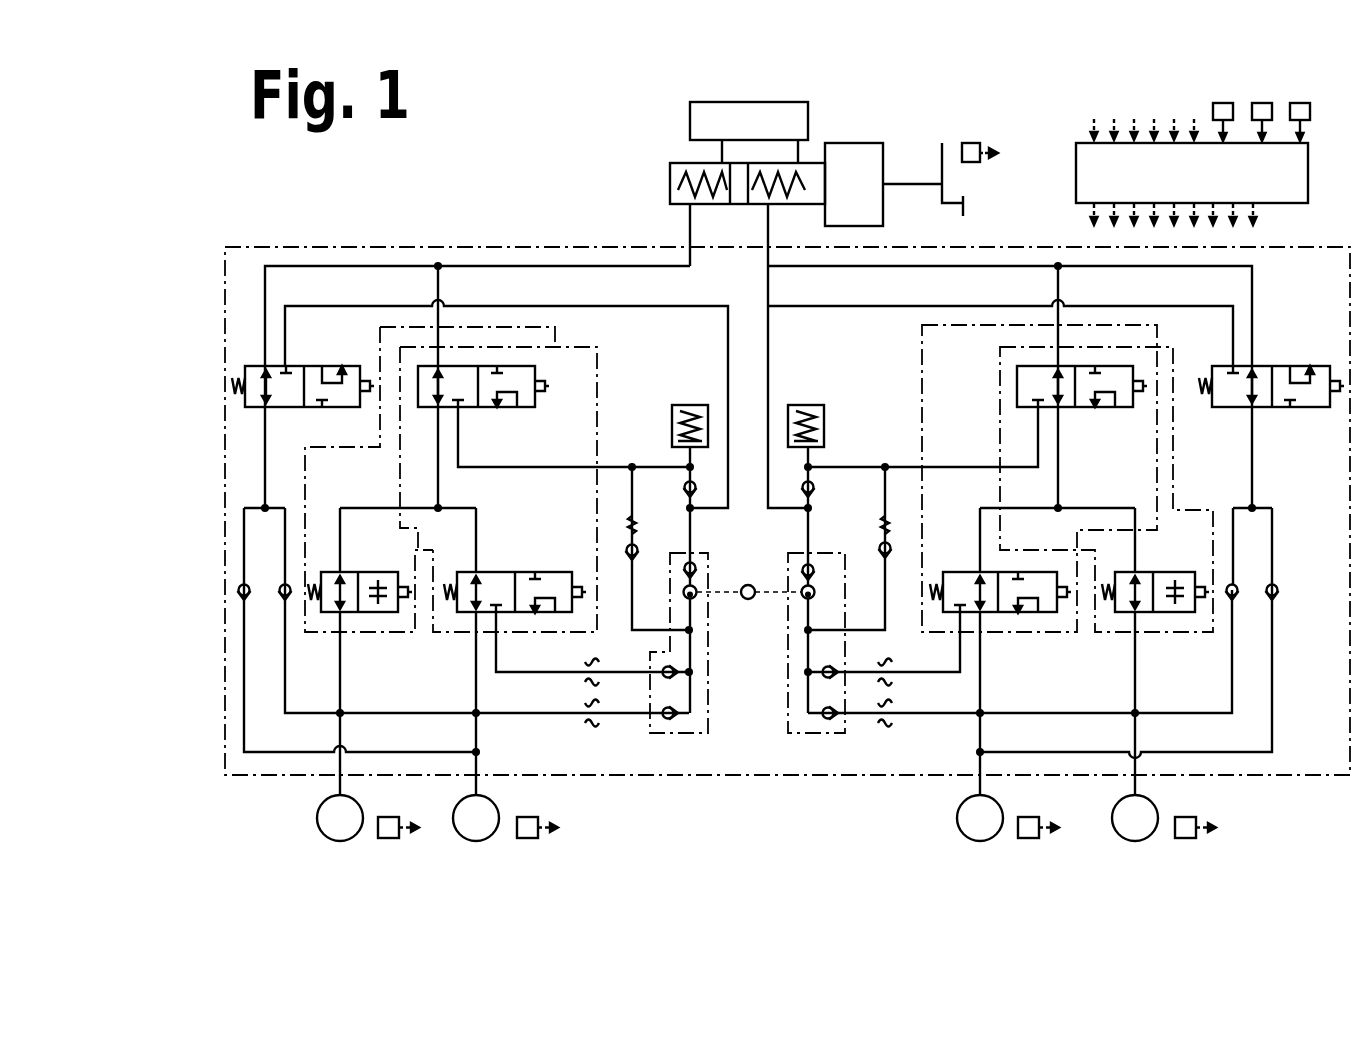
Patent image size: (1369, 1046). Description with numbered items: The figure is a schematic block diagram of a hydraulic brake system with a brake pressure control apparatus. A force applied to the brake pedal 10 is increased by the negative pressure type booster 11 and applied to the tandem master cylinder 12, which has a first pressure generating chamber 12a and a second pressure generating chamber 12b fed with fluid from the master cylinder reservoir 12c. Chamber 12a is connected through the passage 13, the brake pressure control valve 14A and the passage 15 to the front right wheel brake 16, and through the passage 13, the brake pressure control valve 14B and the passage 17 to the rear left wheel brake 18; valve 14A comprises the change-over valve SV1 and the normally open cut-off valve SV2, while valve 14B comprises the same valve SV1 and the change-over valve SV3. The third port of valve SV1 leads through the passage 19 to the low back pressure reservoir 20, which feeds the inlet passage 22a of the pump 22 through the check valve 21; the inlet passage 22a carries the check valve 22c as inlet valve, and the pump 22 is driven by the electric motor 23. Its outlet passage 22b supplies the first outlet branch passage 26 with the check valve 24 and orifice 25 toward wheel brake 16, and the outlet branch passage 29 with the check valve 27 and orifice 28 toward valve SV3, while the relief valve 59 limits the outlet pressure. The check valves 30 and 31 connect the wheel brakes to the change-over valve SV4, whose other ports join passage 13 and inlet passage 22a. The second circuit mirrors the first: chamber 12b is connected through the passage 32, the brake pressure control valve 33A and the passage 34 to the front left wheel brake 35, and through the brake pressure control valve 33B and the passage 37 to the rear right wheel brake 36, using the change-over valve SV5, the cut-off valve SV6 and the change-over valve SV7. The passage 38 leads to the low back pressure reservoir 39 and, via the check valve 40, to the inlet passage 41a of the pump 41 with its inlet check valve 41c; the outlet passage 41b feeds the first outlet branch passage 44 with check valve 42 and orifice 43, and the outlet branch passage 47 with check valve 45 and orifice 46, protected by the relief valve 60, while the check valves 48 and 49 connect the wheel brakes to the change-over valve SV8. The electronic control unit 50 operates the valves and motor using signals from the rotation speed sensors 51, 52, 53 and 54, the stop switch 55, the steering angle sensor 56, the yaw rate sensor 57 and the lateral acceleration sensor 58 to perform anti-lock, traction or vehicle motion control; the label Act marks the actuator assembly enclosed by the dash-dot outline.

The brake pedal 10 is at (965, 206).
The negative pressure type booster 11 is at (862, 143).
The tandem master cylinder 12 is at (672, 185).
The first pressure generating chamber 12a is at (752, 208).
The second pressure generating chamber 12b is at (680, 170).
The master cylinder reservoir 12c is at (690, 120).
The passage 13 is at (770, 215).
The brake pressure control valve 14A is at (1175, 435).
The brake pressure control valve 14B is at (923, 340).
The passage 15 is at (1120, 785).
The front right wheel brake 16 is at (1135, 842).
The passage 17 is at (978, 787).
The rear left wheel brake 18 is at (979, 842).
The passage 19 is at (860, 467).
The low back pressure reservoir 20 is at (808, 405).
The check valve 21 is at (821, 495).
The pump 22 is at (784, 712).
The inlet passage 22a is at (770, 619).
The outlet passage 22b is at (803, 657).
The check valve 22c is at (806, 575).
The electric motor 23 is at (742, 590).
The check valve 24 is at (830, 733).
The orifice 25 is at (830, 726).
The first outlet branch passage 26 is at (940, 715).
The check valve 27 is at (835, 675).
The orifice 28 is at (895, 685).
The outlet branch passage 29 is at (965, 674).
The check valve 30 is at (1272, 552).
The check valve 31 is at (1275, 597).
The passage 32 is at (688, 225).
The brake pressure control valve 33A is at (380, 428).
The brake pressure control valve 33B is at (600, 375).
The passage 34 is at (335, 785).
The front left wheel brake 35 is at (338, 842).
The rear right wheel brake 36 is at (476, 842).
The passage 37 is at (460, 785).
The passage 38 is at (612, 467).
The low back pressure reservoir 39 is at (690, 405).
The check valve 40 is at (684, 482).
The pump 41 is at (700, 735).
The inlet passage 41a is at (694, 533).
The outlet passage 41b is at (690, 655).
The check valve 41c is at (686, 555).
The check valve 42 is at (655, 722).
The orifice 43 is at (592, 718).
The first outlet branch passage 44 is at (520, 713).
The check valve 45 is at (652, 683).
The orifice 46 is at (592, 663).
The outlet branch passage 47 is at (496, 660).
The check valve 48 is at (283, 587).
The check valve 49 is at (243, 592).
The electronic control unit 50 is at (1076, 165).
The rotation speed sensor 51 is at (1185, 838).
The rotation speed sensor 52 is at (1028, 838).
The rotation speed sensor 53 is at (388, 838).
The rotation speed sensor 54 is at (530, 817).
The stop switch 55 is at (971, 143).
The steering angle sensor 56 is at (1216, 103).
The yaw rate sensor 57 is at (1258, 103).
The lateral acceleration sensor 58 is at (1300, 103).
The relief valve 59 is at (890, 540).
The relief valve 60 is at (628, 556).
The electromagnetic change-over valve SV1 is at (1090, 407).
The electromagnetic cut-off valve SV2 is at (1185, 612).
The electromagnetic change-over valve SV3 is at (963, 572).
The electromagnetic change-over valve SV4 is at (1295, 366).
The electromagnetic change-over valve SV5 is at (505, 407).
The electromagnetic cut-off valve SV6 is at (362, 572).
The electromagnetic change-over valve SV7 is at (548, 572).
The electromagnetic change-over valve SV8 is at (340, 372).
The hydraulic actuator Act is at (797, 790).